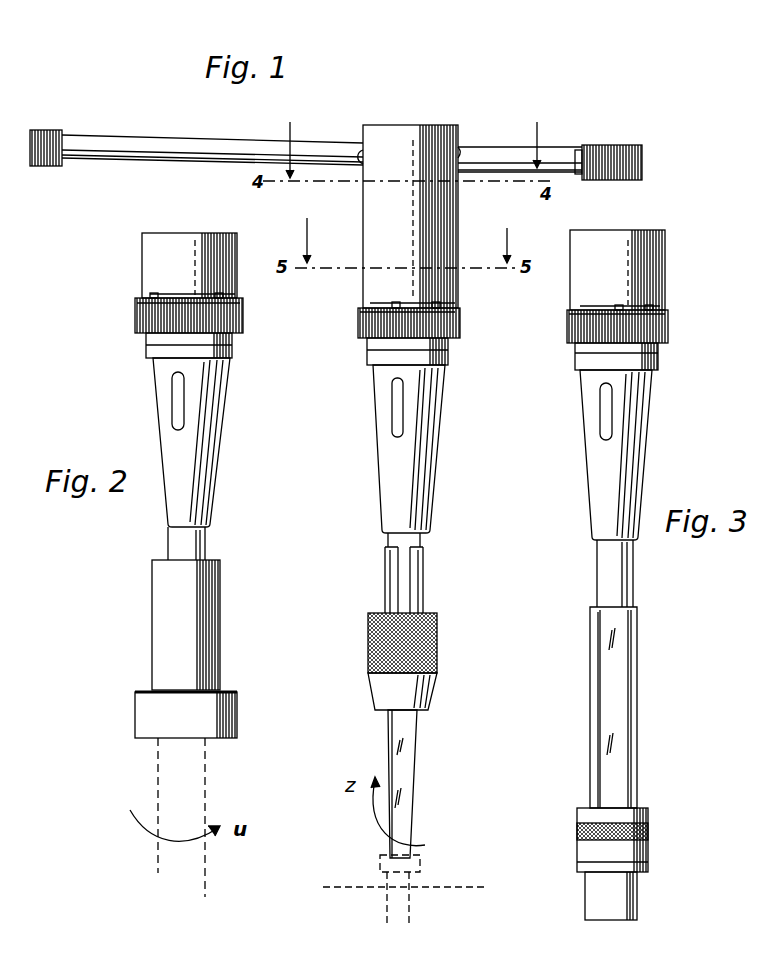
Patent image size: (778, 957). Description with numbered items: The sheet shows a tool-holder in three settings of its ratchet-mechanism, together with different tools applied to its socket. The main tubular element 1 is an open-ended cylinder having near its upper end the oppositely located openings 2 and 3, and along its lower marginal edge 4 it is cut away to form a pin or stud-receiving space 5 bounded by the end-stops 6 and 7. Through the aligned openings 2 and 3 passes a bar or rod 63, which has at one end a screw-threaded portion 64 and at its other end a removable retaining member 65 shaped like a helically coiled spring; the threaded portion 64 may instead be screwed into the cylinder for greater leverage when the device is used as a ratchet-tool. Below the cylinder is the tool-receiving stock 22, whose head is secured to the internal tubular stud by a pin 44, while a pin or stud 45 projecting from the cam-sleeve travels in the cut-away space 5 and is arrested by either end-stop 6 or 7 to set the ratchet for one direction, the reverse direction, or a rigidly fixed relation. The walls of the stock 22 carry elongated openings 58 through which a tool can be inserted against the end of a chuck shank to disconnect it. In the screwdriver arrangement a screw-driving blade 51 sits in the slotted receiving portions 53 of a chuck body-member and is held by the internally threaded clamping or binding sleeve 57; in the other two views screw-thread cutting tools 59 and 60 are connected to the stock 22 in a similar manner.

In FIG. 1, the main tubular element 1 is at (440, 252).
In FIG. 2, the main tubular element 1 is at (228, 250).
In FIG. 3, the main tubular element 1 is at (650, 240).
In FIG. 1, the opening 2 is at (460, 150).
In FIG. 1, the opening 3 is at (368, 170).
In FIG. 1, the lower marginal edge 4 is at (418, 306).
In FIG. 2, the lower marginal edge 4 is at (178, 298).
In FIG. 3, the lower marginal edge 4 is at (607, 306).
In FIG. 1, the pin or stud-receiving space 5 is at (395, 313).
In FIG. 2, the pin or stud-receiving space 5 is at (180, 304).
In FIG. 3, the pin or stud-receiving space 5 is at (590, 315).
In FIG. 1, the end-stop 6 is at (440, 313).
In FIG. 2, the end-stop 6 is at (222, 303).
In FIG. 3, the end-stop 6 is at (652, 309).
In FIG. 1, the end-stop 7 is at (380, 305).
In FIG. 2, the end-stop 7 is at (152, 297).
In FIG. 3, the end-stop 7 is at (582, 308).
In FIG. 1, the stock 22 is at (418, 460).
In FIG. 2, the stock 22 is at (203, 463).
In FIG. 3, the stock 22 is at (637, 463).
In FIG. 1, the pin 44 is at (448, 360).
In FIG. 2, the pin 44 is at (232, 355).
In FIG. 3, the pin 44 is at (658, 363).
In FIG. 1, the pin or stud 45 is at (440, 327).
In FIG. 2, the pin or stud 45 is at (152, 300).
In FIG. 3, the pin or stud 45 is at (620, 308).
In FIG. 1, the screw-driving blade 51 is at (392, 596).
In FIG. 1, the slotted receiving portions 53 is at (392, 555).
In FIG. 1, the clamping or binding sleeve 57 is at (430, 697).
In FIG. 1, the openings 58 is at (398, 410).
In FIG. 2, the openings 58 is at (180, 410).
In FIG. 3, the openings 58 is at (605, 410).
In FIG. 2, the screw-thread cutting tool 59 is at (202, 665).
In FIG. 3, the screw-thread cutting tool 60 is at (620, 692).
In FIG. 1, the bar or rod 63 is at (197, 140).
In FIG. 1, the screw-threaded portion 64 is at (50, 135).
In FIG. 1, the removable retaining member 65 is at (610, 147).